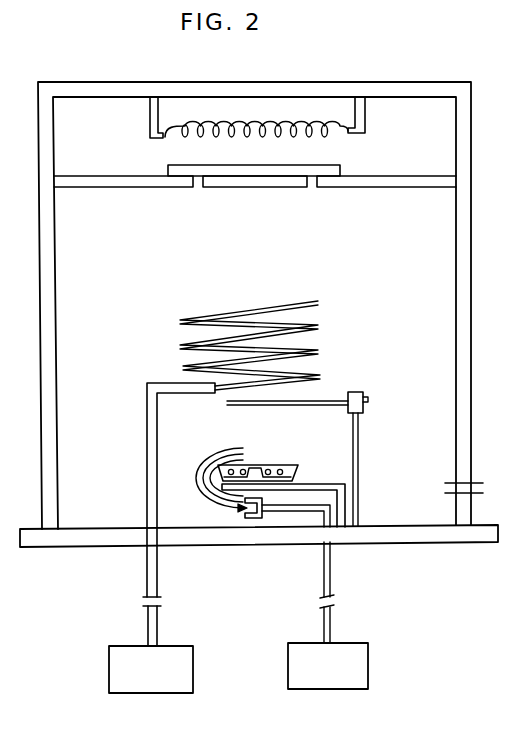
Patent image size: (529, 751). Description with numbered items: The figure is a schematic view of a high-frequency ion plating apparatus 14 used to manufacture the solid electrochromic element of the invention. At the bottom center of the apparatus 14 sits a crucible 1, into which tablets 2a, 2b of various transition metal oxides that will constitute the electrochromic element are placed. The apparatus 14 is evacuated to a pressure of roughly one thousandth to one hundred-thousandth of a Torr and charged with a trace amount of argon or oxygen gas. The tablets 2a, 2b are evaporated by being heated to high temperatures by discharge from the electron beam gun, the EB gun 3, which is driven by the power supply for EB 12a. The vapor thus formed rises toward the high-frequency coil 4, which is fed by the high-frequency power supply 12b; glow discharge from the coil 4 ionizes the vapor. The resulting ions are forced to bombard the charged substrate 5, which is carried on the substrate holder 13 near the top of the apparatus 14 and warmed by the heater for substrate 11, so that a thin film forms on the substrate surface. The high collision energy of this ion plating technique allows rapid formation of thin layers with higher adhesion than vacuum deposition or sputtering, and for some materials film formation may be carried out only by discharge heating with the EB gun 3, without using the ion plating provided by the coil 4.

The crucible 1 is at (297, 478).
The tablet 2a is at (245, 464).
The tablet 2b is at (282, 464).
The EB gun 3 is at (255, 531).
The high-frequency coil 4 is at (322, 303).
The substrate 5 is at (247, 188).
The heater for substrate 11 is at (176, 146).
The power supply for EB 12a is at (368, 675).
The high-frequency power supply 12b is at (193, 680).
The substrate holder 13 is at (342, 166).
The ion plating apparatus 14 is at (472, 296).